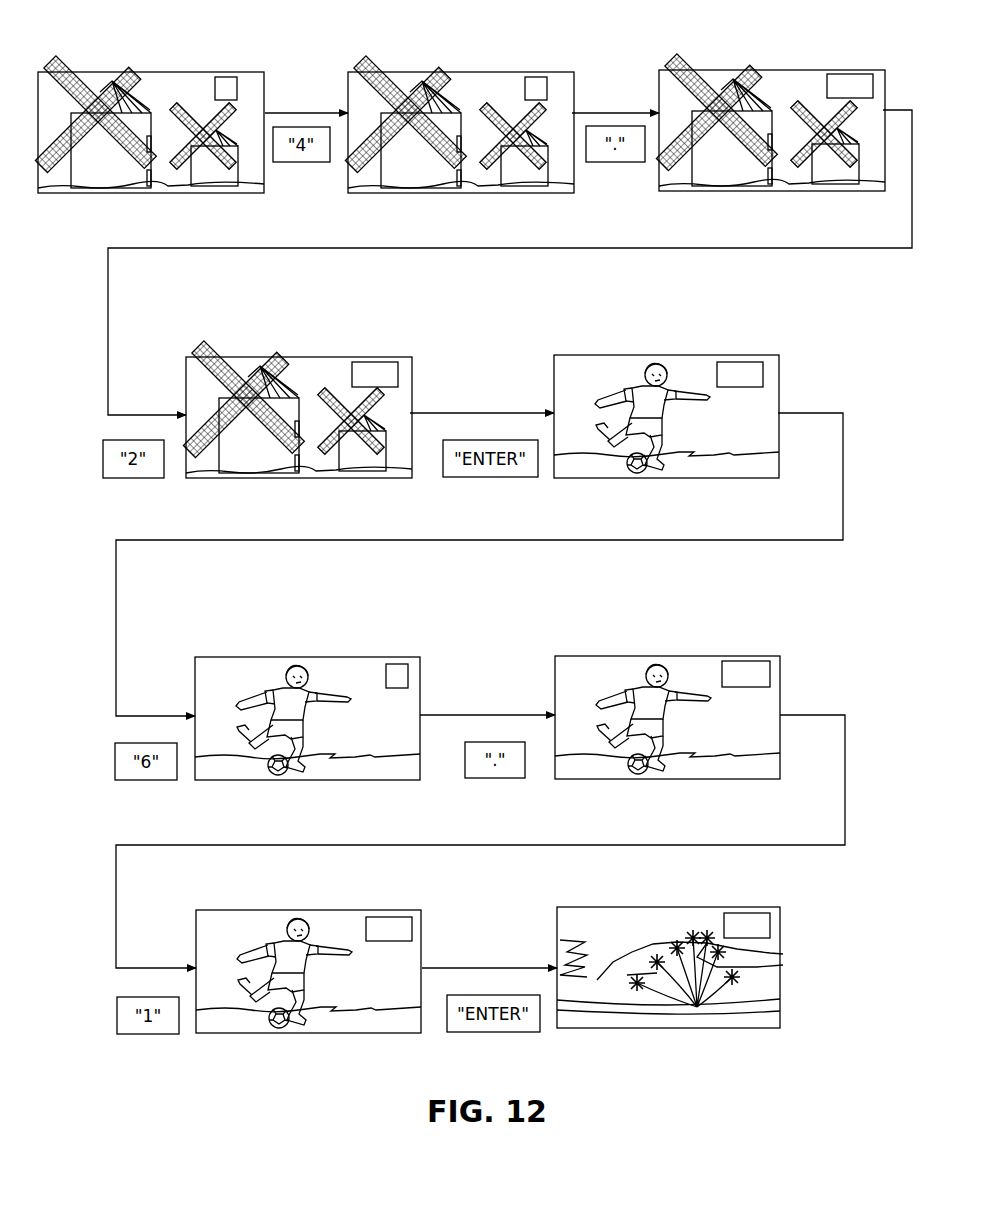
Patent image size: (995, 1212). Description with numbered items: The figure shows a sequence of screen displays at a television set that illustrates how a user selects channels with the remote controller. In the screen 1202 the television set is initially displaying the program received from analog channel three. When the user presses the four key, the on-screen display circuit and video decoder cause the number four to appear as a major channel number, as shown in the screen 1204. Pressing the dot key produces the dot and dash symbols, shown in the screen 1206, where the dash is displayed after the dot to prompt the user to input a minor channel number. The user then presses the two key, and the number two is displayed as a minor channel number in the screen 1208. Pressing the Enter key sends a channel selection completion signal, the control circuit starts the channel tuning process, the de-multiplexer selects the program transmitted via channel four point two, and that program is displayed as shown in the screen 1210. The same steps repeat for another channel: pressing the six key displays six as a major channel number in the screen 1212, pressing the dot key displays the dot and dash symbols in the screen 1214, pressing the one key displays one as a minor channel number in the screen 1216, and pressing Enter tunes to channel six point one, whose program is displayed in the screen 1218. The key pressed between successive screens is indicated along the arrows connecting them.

The screen 1202 is at (208, 72).
The screen 1204 is at (517, 72).
The screen 1206 is at (828, 70).
The screen 1208 is at (355, 357).
The screen 1210 is at (731, 355).
The screen 1212 is at (372, 657).
The screen 1214 is at (730, 656).
The screen 1216 is at (373, 910).
The screen 1218 is at (780, 933).